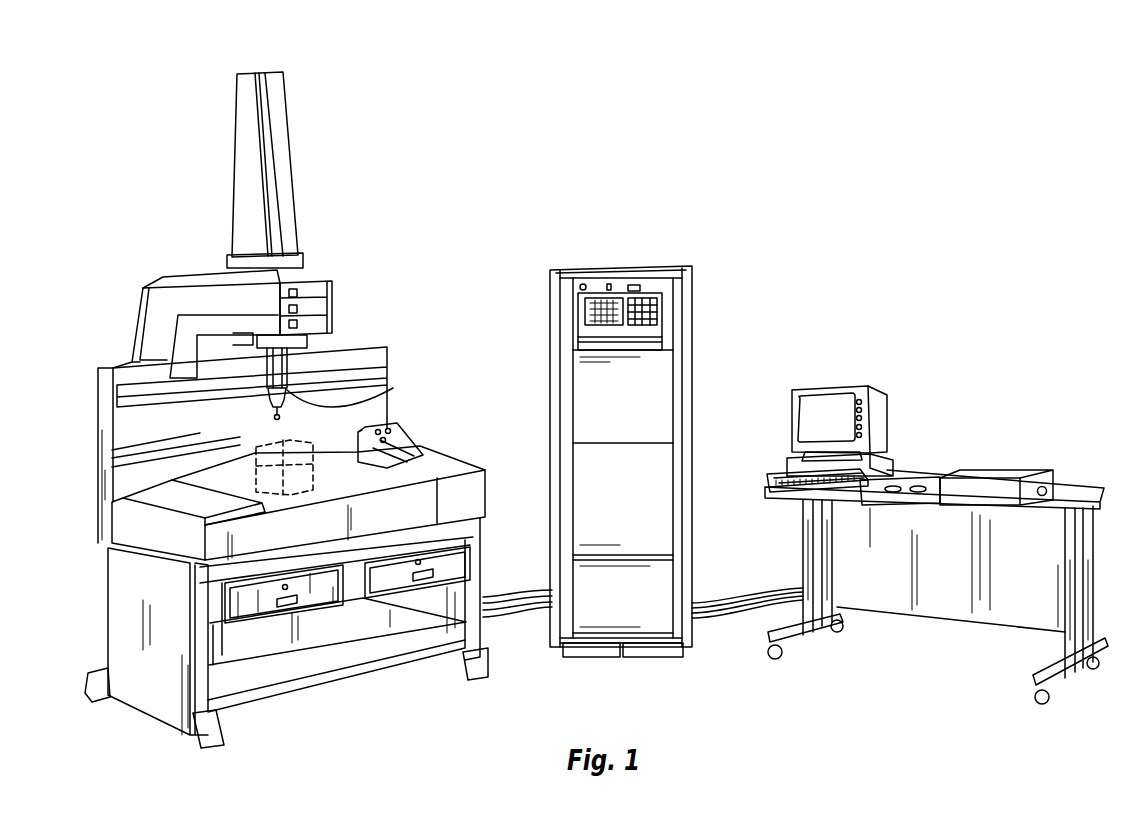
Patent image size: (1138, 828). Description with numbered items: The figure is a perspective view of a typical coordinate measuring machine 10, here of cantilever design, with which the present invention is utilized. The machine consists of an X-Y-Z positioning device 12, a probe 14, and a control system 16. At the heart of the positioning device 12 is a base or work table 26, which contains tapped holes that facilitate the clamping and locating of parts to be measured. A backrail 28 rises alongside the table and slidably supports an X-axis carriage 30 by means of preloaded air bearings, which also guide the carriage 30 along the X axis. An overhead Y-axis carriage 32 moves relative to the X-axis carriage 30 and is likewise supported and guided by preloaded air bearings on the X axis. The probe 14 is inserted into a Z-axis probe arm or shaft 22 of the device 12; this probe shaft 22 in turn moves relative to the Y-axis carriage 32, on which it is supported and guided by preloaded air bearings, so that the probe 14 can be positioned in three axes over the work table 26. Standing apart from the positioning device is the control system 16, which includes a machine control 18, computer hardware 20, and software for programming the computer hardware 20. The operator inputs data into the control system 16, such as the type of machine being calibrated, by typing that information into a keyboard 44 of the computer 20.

The coordinate measuring machine 10 is at (1019, 352).
The X-Y-Z positioning device 12 is at (393, 352).
The probe 14 is at (333, 397).
The control system 16 is at (828, 358).
The machine control 18 is at (693, 302).
The computer hardware 20 is at (900, 433).
The Z-axis probe arm or shaft 22 is at (281, 368).
The base or work table 26 is at (333, 487).
The backrail 28 is at (98, 368).
The X-axis carriage 30 is at (145, 296).
The overhead Y-axis carriage 32 is at (236, 243).
The keyboard 44 is at (800, 483).